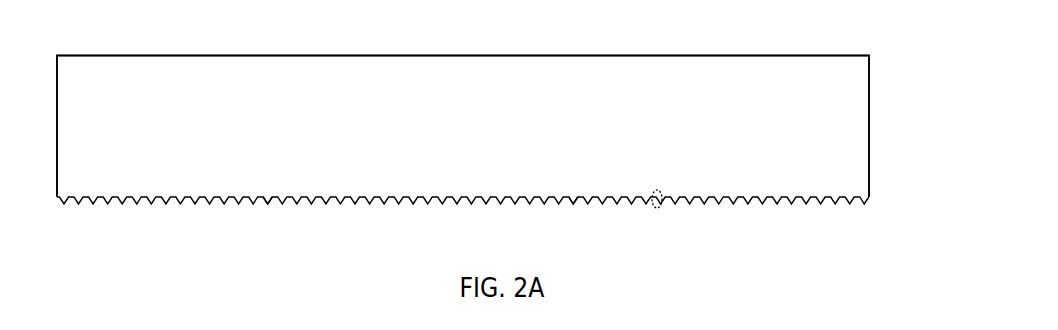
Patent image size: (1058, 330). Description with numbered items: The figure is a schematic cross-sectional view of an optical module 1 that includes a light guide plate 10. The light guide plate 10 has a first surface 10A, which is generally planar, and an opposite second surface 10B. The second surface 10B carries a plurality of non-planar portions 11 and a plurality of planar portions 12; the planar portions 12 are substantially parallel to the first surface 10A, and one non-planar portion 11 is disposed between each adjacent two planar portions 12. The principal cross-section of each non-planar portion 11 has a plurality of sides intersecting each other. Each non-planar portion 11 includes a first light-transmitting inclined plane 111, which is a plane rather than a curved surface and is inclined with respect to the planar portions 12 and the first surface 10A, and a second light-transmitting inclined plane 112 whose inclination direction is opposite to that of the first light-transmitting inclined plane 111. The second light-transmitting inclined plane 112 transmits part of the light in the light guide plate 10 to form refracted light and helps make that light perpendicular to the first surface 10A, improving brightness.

The optical module 1 is at (493, 16).
The light guide plate 10 is at (850, 150).
The first surface 10A is at (850, 55).
The second surface 10B is at (850, 204).
The non-planar portion 11 is at (657, 208).
The planar portion 12 is at (582, 200).
The first light-transmitting inclined plane 111 is at (276, 199).
The second light-transmitting inclined plane 112 is at (270, 199).